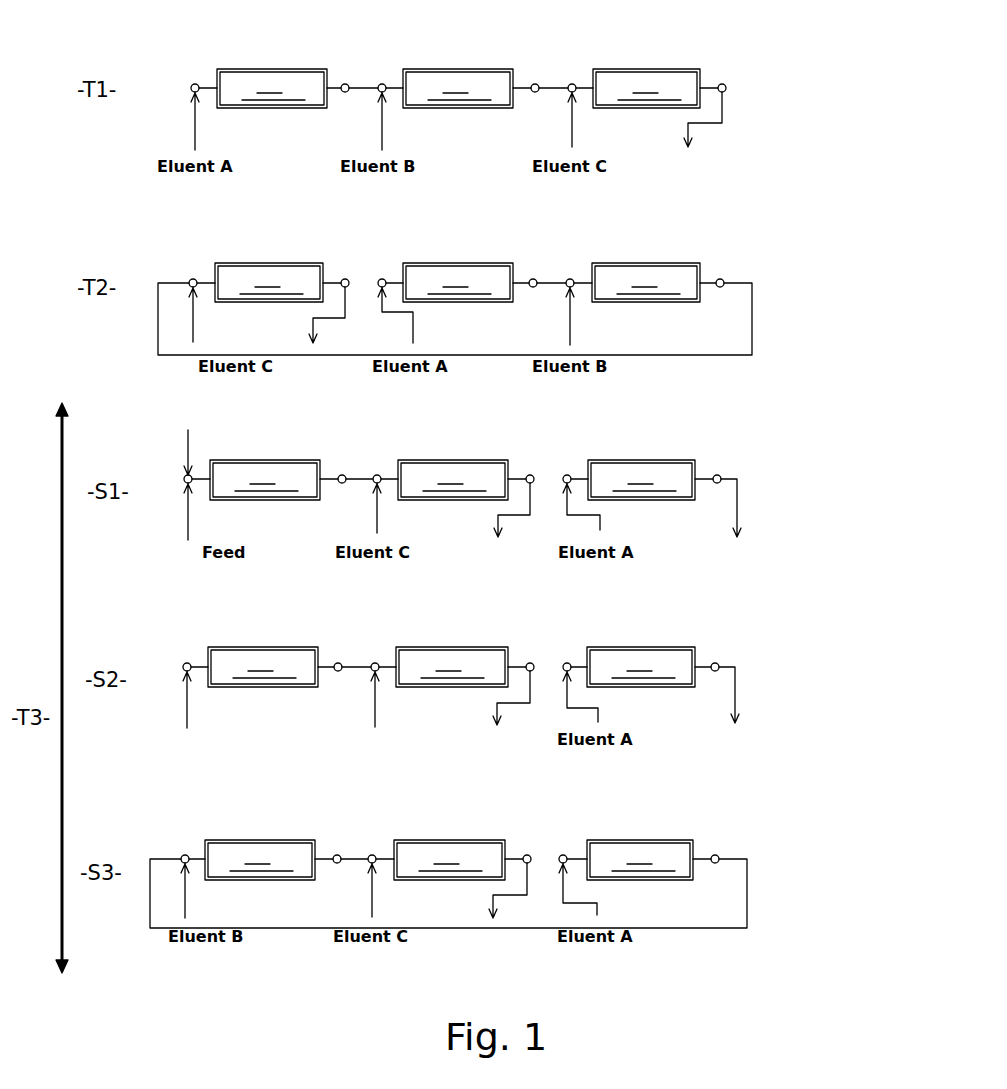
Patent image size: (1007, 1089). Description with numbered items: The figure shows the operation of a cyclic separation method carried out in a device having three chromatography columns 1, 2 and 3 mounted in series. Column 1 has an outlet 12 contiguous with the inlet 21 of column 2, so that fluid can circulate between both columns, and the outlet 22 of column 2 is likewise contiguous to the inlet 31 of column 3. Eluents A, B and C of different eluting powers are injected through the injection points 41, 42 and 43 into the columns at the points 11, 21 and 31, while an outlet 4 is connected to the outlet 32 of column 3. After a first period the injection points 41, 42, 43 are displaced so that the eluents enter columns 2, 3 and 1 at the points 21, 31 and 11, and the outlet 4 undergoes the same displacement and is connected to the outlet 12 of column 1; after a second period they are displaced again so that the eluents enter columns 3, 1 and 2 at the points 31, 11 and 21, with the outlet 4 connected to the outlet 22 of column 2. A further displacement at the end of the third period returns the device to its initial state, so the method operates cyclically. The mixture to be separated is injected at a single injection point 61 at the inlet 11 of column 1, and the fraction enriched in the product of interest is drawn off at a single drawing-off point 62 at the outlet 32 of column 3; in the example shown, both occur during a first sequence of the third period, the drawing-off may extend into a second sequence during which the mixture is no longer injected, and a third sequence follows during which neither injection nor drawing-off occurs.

The column 1 is at (256, 75).
The column 2 is at (457, 75).
The column 3 is at (651, 75).
The outlet 4 is at (690, 130).
The inlet 11 is at (194, 84).
The outlet 12 is at (344, 84).
The inlet 21 is at (383, 84).
The outlet 22 is at (534, 84).
The inlet 31 is at (573, 84).
The outlet 32 is at (723, 84).
The injection point 41 is at (197, 132).
The injection point 42 is at (380, 141).
The injection point 43 is at (574, 128).
The injection point 61 is at (186, 440).
The drawing-off point 62 is at (740, 505).